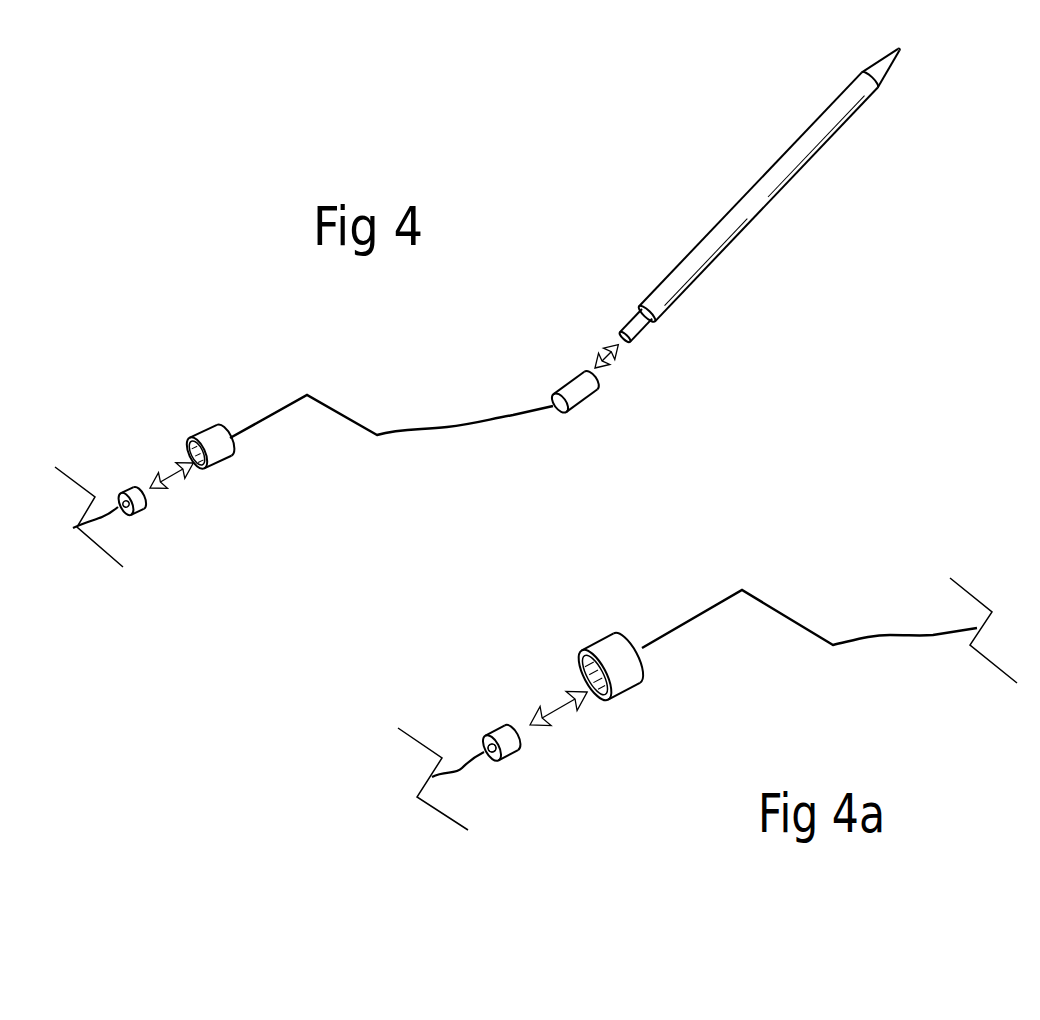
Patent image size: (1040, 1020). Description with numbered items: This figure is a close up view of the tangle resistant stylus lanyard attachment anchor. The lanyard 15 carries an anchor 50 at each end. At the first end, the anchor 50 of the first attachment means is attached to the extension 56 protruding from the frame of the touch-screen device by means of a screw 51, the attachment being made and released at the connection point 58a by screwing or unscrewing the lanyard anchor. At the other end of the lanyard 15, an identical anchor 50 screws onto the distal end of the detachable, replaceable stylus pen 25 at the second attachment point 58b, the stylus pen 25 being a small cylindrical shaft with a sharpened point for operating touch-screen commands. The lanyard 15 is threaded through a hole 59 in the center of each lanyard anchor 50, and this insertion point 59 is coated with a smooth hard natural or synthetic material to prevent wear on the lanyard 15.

In FIG. 4, the lanyard 15 is at (387, 427).
In FIG. 4A, the lanyard 15 is at (852, 632).
In FIG. 4, the stylus pen 25 is at (708, 250).
In FIG. 4, the anchor 50 is at (572, 412).
In FIG. 4A, the anchor 50 is at (660, 704).
In FIG. 4, the screw 51 is at (150, 508).
In FIG. 4A, the screw 51 is at (527, 753).
In FIG. 4, the extension 56 is at (102, 517).
In FIG. 4A, the extension 56 is at (460, 768).
In FIG. 4, the connection point 58a is at (215, 427).
In FIG. 4A, the connection point 58a is at (620, 638).
In FIG. 4, the second attachment point 58b is at (578, 385).
In FIG. 4A, the hole 59 is at (643, 657).